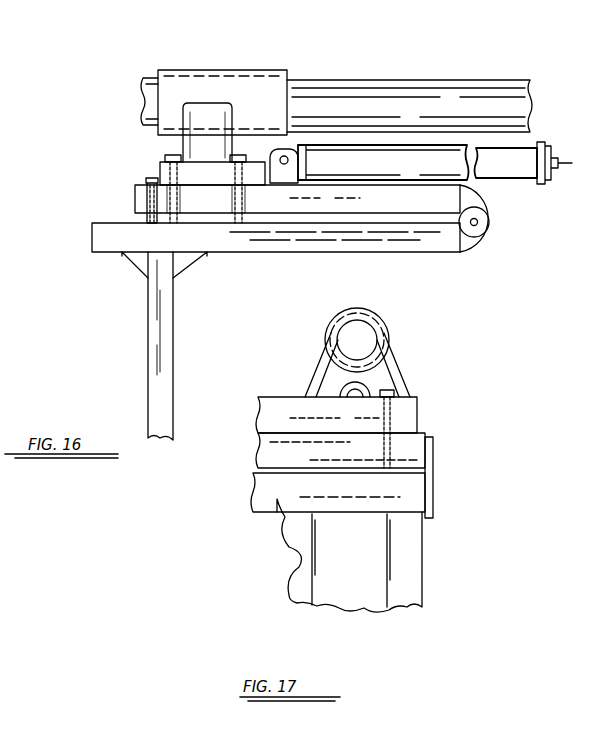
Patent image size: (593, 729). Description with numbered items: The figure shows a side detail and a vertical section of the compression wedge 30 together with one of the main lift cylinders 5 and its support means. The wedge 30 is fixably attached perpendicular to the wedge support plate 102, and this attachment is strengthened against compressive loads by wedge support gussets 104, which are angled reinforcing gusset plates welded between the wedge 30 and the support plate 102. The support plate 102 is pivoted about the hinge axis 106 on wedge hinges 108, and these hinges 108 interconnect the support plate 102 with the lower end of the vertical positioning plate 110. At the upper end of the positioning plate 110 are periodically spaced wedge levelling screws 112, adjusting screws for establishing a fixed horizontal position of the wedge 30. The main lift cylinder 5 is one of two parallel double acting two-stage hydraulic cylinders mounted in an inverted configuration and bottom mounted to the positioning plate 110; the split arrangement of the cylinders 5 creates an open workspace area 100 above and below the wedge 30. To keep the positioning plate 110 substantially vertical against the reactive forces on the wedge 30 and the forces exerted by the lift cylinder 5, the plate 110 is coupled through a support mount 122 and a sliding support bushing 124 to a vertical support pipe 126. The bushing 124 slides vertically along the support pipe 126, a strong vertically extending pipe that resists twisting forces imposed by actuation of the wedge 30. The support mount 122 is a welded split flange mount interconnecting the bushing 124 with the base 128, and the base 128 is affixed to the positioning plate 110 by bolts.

In FIG. 16, the main lift cylinder 5 is at (512, 184).
In FIG. 17, the main lift cylinder 5 is at (349, 388).
In FIG. 16, the compression wedge 30 is at (157, 353).
In FIG. 17, the compression wedge 30 is at (422, 568).
In FIG. 16, the open workspace area 100 is at (280, 152).
In FIG. 16, the wedge support plate 102 is at (266, 252).
In FIG. 16, the wedge support gusset 104 is at (132, 270).
In FIG. 16, the hinge axis 106 is at (478, 222).
In FIG. 16, the wedge hinge 108 is at (482, 242).
In FIG. 16, the vertical positioning plate 110 is at (135, 197).
In FIG. 16, the wedge levelling screw 112 is at (146, 184).
In FIG. 17, the wedge levelling screw 112 is at (436, 456).
In FIG. 16, the support mount 122 is at (190, 150).
In FIG. 17, the support mount 122 is at (318, 372).
In FIG. 16, the sliding support bushing 124 is at (216, 69).
In FIG. 17, the sliding support bushing 124 is at (328, 326).
In FIG. 16, the vertical support pipe 126 is at (326, 98).
In FIG. 17, the vertical support pipe 126 is at (357, 340).
In FIG. 16, the base 128 is at (212, 176).